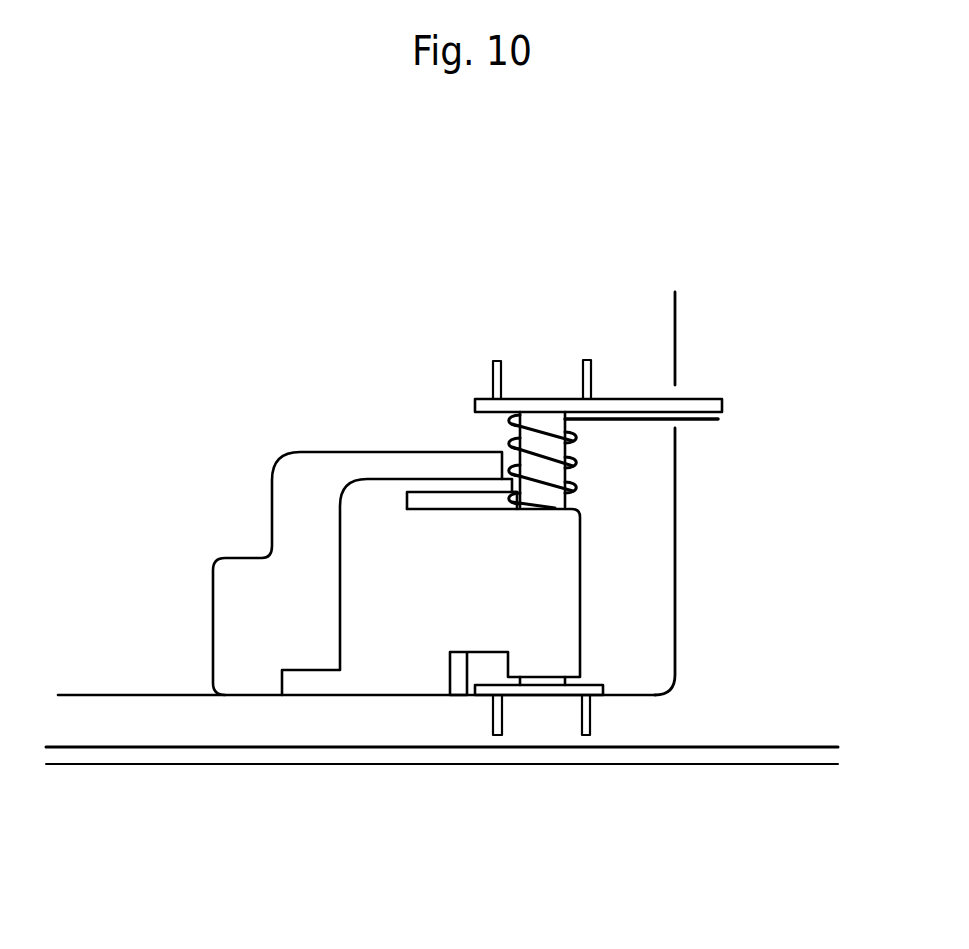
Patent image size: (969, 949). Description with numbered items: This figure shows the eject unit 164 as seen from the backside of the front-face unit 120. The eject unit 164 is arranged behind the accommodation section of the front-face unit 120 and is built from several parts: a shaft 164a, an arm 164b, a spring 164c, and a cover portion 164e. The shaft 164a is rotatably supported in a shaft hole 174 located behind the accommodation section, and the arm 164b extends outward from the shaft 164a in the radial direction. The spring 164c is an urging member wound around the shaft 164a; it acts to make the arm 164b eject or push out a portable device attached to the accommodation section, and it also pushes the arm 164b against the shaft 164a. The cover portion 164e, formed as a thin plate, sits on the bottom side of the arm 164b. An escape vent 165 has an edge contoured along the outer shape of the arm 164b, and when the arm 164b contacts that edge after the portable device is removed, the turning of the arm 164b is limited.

The front-face unit 120 is at (197, 767).
The eject unit 164 is at (402, 479).
The shaft 164a is at (570, 452).
The arm 164b is at (402, 617).
The spring 164c is at (570, 488).
The cover portion 164e is at (307, 672).
The escape vent 165 is at (245, 560).
The shaft hole 174 is at (555, 397).